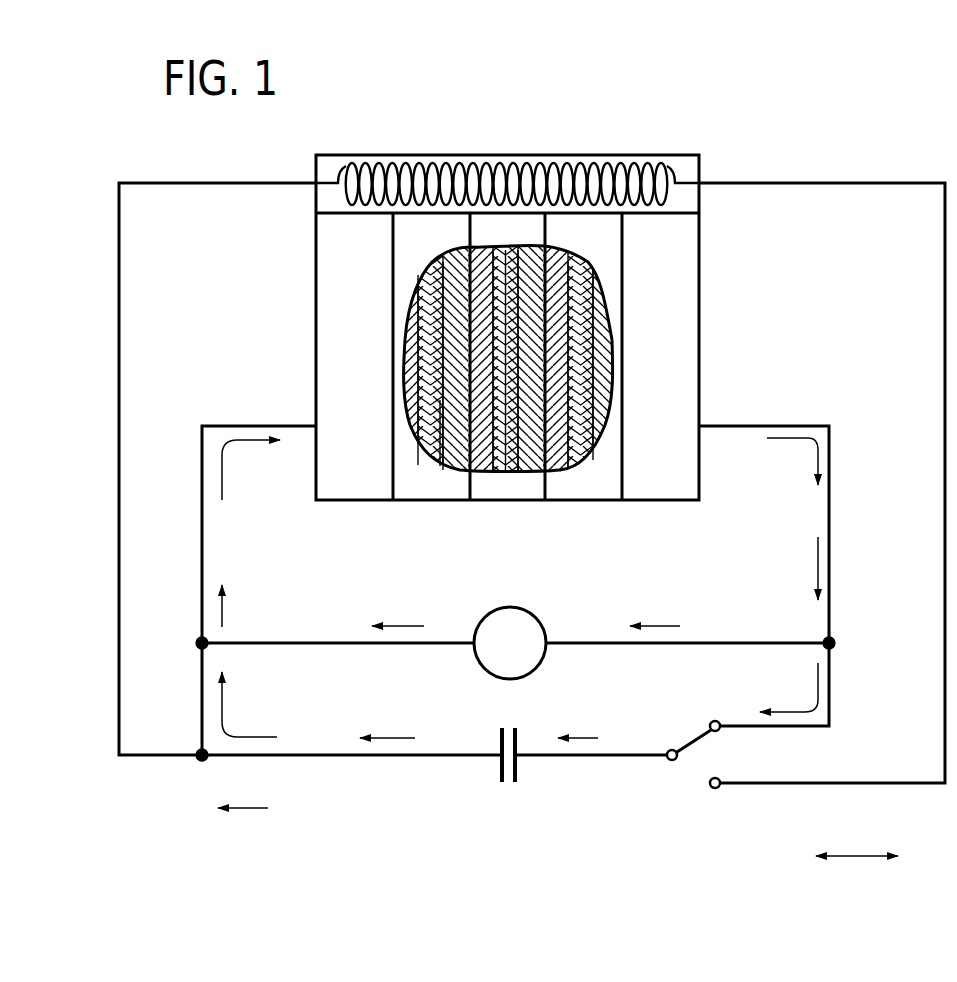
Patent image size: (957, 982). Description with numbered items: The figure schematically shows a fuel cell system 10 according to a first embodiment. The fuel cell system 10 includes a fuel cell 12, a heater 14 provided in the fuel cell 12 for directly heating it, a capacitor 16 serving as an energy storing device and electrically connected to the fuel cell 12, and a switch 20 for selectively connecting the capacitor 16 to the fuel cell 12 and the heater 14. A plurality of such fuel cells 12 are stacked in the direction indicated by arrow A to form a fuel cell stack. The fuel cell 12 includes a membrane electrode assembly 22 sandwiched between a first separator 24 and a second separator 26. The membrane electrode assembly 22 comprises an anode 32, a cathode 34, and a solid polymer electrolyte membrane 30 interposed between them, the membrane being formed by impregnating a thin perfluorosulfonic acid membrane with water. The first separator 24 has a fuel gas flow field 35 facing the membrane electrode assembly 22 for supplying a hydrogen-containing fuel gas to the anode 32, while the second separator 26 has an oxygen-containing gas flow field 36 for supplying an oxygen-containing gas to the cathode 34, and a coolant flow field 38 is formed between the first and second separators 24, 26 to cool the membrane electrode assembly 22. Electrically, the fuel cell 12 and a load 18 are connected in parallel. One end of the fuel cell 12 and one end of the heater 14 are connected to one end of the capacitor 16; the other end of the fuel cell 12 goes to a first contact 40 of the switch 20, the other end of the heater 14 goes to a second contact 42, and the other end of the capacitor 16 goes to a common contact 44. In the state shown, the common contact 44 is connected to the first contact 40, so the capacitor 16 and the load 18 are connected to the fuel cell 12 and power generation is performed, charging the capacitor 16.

The fuel cell system 10 is at (860, 140).
The fuel cell 12 is at (703, 294).
The heater 14 is at (399, 161).
The capacitor 16 is at (508, 786).
The load 18 is at (526, 610).
The switch 20 is at (697, 737).
The membrane electrode assembly 22 is at (557, 540).
The first separator 24 is at (420, 380).
The second separator 26 is at (458, 470).
The solid polymer electrolyte membrane 30 is at (507, 470).
The anode 32 is at (500, 470).
The cathode 34 is at (512, 470).
The fuel gas flow field 35 is at (572, 315).
The oxygen-containing gas flow field 36 is at (585, 343).
The coolant flow field 38 is at (460, 312).
The first contact 40 is at (716, 720).
The second contact 42 is at (715, 790).
The common contact 44 is at (670, 762).